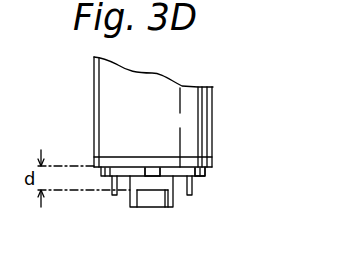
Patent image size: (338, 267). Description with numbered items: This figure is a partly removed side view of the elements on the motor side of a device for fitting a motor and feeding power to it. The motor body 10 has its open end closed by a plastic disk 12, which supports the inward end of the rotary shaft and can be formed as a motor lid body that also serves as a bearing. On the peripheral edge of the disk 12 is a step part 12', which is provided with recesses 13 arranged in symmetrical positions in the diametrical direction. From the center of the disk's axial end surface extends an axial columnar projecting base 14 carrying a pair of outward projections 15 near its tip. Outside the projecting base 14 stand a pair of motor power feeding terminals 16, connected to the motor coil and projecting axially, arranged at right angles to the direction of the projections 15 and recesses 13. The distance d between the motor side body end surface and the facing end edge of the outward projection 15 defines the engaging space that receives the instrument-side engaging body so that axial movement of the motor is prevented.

The motor body 10 is at (203, 97).
The plastic disk 12 is at (176, 156).
The step part 12' is at (225, 177).
The recesses 13 is at (152, 173).
The projecting base 14 is at (158, 186).
The outward projections 15 is at (163, 197).
The motor power feeding terminals 16 is at (192, 195).